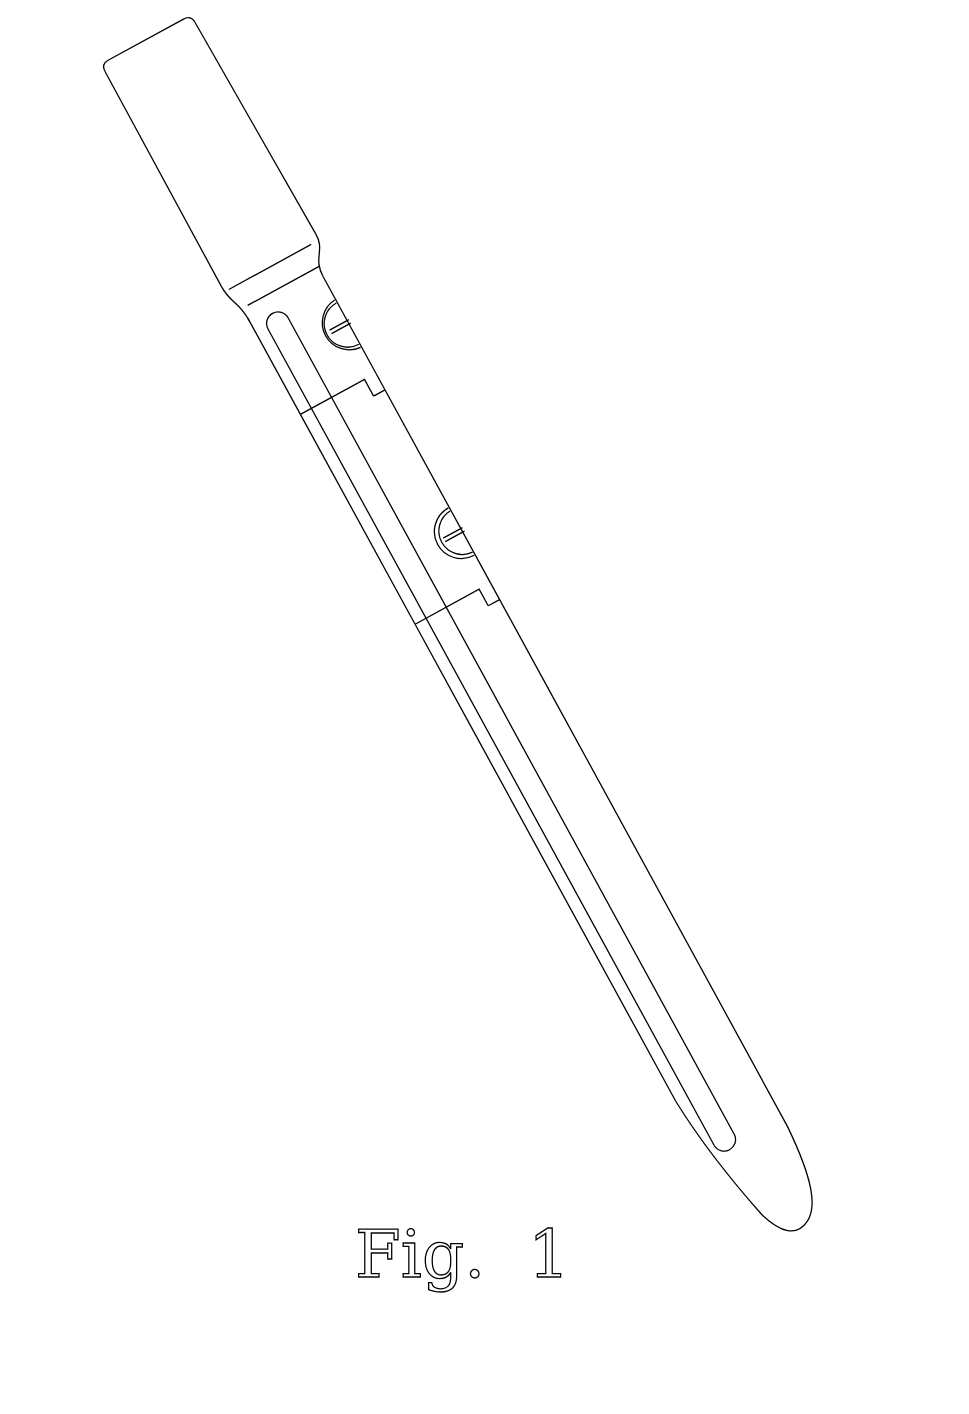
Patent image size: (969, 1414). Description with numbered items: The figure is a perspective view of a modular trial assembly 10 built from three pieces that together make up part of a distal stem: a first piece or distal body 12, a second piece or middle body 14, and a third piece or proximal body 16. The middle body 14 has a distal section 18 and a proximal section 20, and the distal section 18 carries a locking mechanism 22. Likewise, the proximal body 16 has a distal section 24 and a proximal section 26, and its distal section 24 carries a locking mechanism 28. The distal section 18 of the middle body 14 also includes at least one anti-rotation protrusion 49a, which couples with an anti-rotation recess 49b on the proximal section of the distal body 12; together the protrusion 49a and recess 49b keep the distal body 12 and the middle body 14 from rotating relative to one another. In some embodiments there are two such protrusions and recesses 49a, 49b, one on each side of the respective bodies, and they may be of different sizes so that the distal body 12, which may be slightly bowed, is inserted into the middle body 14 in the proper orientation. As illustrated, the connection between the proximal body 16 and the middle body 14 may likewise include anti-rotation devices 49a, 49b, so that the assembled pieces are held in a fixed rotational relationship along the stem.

The modular trial assembly 10 is at (502, 236).
The distal body 12 is at (627, 848).
The middle body 14 is at (413, 438).
The proximal body 16 is at (252, 133).
The distal section 18 is at (488, 580).
The proximal section 20 is at (370, 367).
The locking mechanism 22 is at (466, 535).
The distal section 24 is at (321, 273).
The proximal section 26 is at (205, 40).
The locking mechanism 28 is at (347, 317).
The anti-rotation protrusion 49a is at (377, 382).
The anti-rotation recess 49b is at (383, 388).